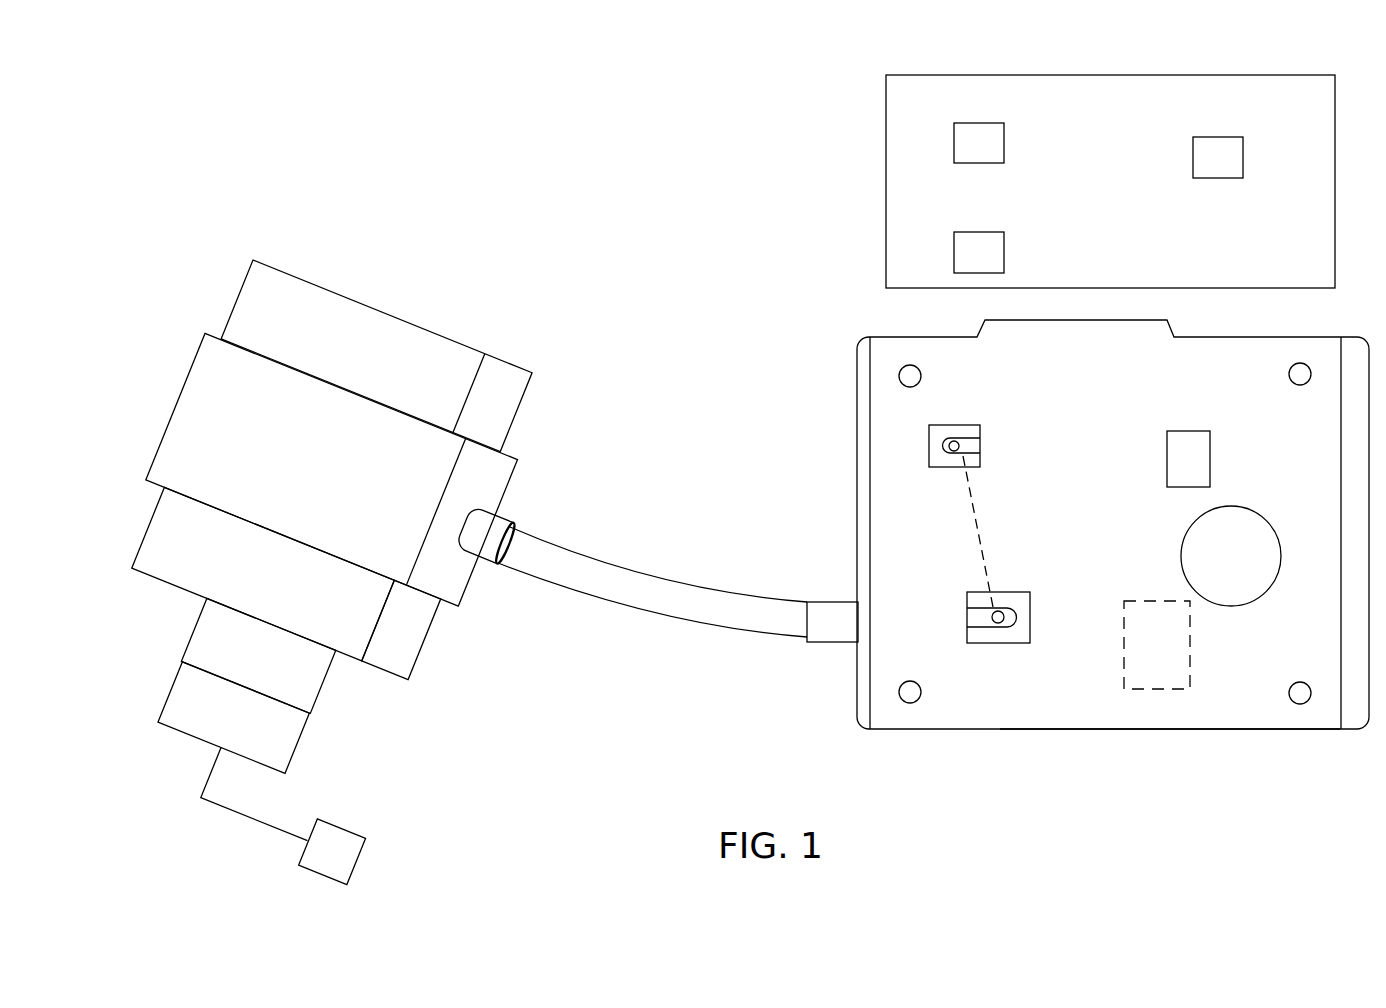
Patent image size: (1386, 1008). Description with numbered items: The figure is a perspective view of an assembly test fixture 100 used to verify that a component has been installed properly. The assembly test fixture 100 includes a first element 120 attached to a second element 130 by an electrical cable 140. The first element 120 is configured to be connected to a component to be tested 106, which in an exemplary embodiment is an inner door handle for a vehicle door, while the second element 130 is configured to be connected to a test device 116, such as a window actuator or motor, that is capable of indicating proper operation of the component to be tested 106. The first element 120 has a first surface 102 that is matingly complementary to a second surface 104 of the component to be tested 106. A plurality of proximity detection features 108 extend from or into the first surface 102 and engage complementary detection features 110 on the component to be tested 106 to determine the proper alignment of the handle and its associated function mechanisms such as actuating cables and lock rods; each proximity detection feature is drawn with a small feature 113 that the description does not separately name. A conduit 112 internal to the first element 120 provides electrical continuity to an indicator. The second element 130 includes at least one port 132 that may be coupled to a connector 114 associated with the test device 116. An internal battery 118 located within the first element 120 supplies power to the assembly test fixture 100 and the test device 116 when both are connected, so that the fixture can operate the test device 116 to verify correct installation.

The assembly test fixture 100 is at (612, 154).
The first surface 102 is at (1124, 500).
The second surface 104 is at (1140, 175).
The component to be tested 106 is at (1228, 75).
The proximity detection features 108 is at (968, 425).
The complementary detection features 110 is at (992, 122).
The conduit 112 is at (990, 530).
The contact pin 113 is at (954, 453).
The connector 114 is at (300, 733).
The test device 116 is at (338, 827).
The internal battery 118 is at (1190, 660).
The first element 120 is at (1253, 730).
The second element 130 is at (392, 312).
The port 132 is at (190, 638).
The electrical cable 140 is at (657, 575).